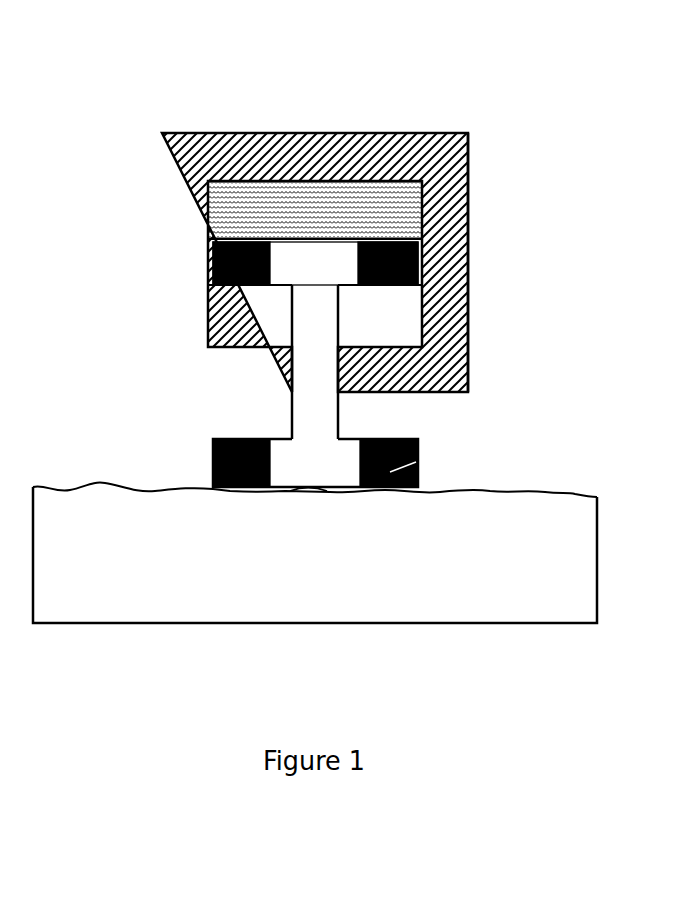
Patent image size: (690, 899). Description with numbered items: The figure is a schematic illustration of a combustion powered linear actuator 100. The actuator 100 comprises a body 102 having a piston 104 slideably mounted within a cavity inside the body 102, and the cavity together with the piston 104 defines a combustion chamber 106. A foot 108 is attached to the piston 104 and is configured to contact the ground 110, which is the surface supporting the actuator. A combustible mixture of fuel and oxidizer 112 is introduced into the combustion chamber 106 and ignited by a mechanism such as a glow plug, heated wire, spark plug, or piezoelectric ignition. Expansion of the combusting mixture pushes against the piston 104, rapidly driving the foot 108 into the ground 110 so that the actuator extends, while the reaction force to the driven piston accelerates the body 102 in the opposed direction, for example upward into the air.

The combustion powered linear actuator 100 is at (563, 55).
The body 102 is at (277, 145).
The piston 104 is at (230, 262).
The combustion chamber 106 is at (485, 213).
The foot 108 is at (390, 472).
The ground 110 is at (560, 553).
The combustible mixture of fuel and oxidizer 112 is at (227, 195).